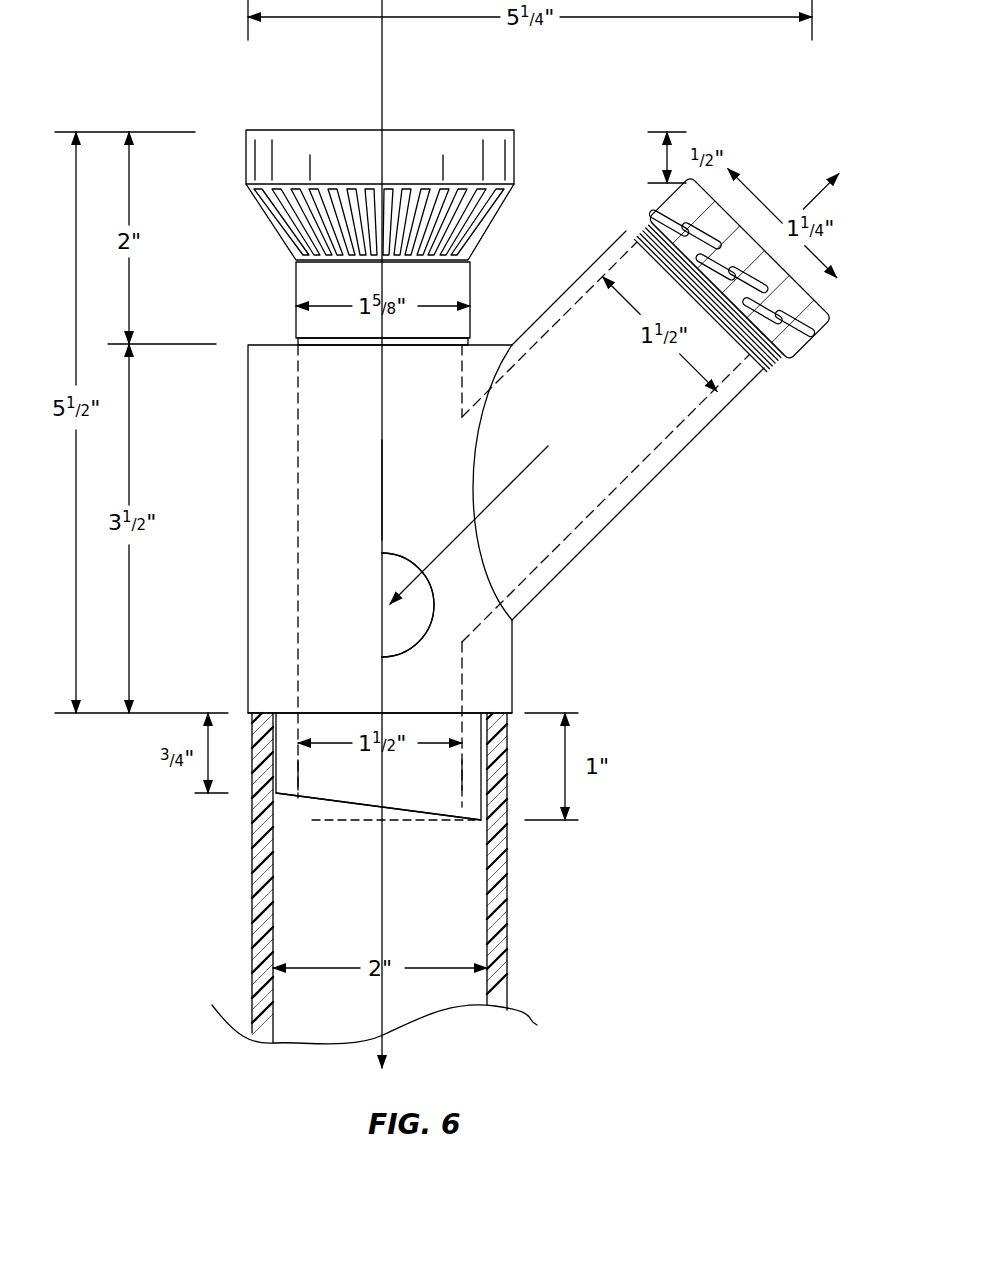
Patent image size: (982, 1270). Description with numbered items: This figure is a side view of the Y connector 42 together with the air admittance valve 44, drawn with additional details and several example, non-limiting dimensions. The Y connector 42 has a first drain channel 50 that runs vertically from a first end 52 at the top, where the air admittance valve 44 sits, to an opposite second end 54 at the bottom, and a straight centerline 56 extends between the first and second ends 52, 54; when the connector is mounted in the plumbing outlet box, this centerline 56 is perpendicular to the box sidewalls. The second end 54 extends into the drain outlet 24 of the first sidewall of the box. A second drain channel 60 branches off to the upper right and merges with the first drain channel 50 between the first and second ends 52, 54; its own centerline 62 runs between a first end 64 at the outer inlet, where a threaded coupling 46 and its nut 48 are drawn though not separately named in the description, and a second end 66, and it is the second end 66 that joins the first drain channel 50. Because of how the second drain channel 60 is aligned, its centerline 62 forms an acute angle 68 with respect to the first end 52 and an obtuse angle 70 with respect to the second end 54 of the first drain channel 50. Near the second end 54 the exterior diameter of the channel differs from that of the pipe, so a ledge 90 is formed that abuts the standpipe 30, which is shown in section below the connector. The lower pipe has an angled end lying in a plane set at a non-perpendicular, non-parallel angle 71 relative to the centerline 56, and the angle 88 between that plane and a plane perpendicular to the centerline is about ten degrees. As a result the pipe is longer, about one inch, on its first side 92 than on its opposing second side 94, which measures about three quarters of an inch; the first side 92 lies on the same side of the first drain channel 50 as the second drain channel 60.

The drain outlet 24 is at (365, 712).
The standpipe 30 is at (252, 927).
The Y connector 42 is at (222, 443).
The air admittance valve 44 is at (282, 130).
The threaded inlet nut assembly 46 is at (818, 293).
The nut 48 is at (803, 328).
The first drain channel 50 is at (461, 482).
The first end 52 is at (343, 352).
The second end 54 is at (445, 807).
The centerline 56 is at (382, 490).
The second drain channel 60 is at (638, 425).
The centerline of the second drain channel 62 is at (614, 362).
The first end 64 is at (707, 215).
The second end 66 is at (485, 409).
The acute angle 68 is at (402, 553).
The obtuse angle 70 is at (430, 637).
The non-perpendicular, non-parallel angle 71 is at (380, 790).
The angle 88 is at (418, 814).
The ledge 90 is at (500, 712).
The first side 92 is at (481, 773).
The second side 94 is at (276, 773).